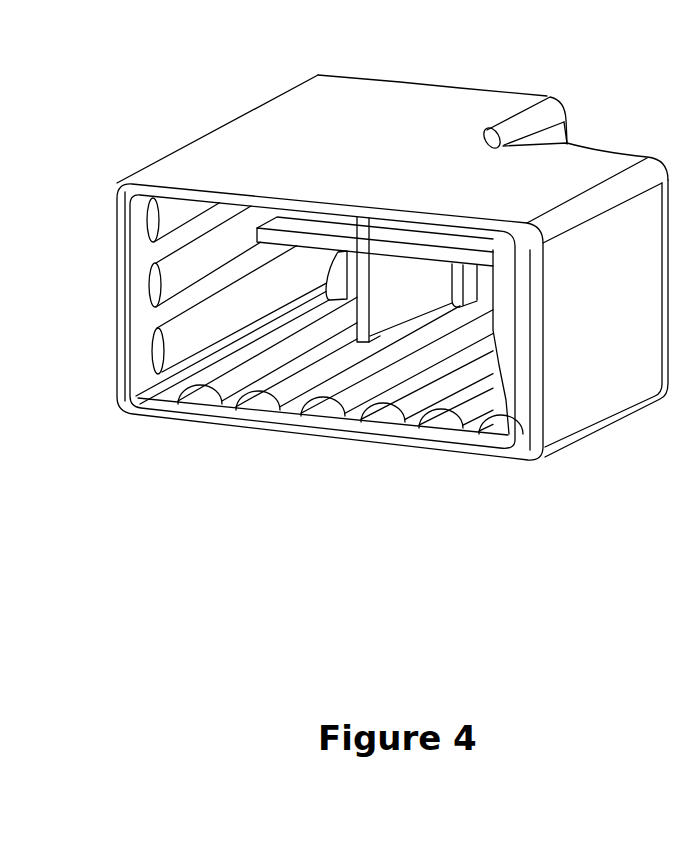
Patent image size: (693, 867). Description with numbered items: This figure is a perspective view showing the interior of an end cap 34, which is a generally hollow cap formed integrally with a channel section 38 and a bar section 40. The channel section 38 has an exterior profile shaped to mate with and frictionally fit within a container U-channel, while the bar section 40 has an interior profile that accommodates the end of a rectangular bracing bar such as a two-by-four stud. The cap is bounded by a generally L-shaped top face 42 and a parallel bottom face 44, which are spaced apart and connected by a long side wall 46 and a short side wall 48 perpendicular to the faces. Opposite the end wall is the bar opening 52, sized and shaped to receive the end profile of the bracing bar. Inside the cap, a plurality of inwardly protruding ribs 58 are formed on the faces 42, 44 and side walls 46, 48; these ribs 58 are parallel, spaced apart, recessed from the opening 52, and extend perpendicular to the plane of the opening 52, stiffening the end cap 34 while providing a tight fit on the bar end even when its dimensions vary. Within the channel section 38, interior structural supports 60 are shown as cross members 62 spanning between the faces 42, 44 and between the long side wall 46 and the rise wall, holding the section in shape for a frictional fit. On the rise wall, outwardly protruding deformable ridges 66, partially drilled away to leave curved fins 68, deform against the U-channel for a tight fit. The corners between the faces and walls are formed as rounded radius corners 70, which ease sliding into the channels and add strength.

The end cap 34 is at (306, 100).
The channel section 38 is at (425, 119).
The bar section 40 is at (451, 201).
The top face 42 is at (262, 124).
The bottom parallel face 44 is at (420, 427).
The long side wall 46 is at (145, 307).
The short side wall 48 is at (592, 402).
The bar opening 52 is at (146, 410).
The ribs 58 is at (150, 270).
The interior structural supports 60 is at (416, 298).
The cross members 62 is at (306, 230).
The deformable ridges 66 is at (561, 128).
The curved fins 68 is at (572, 146).
The rounded radius corners 70 is at (548, 103).